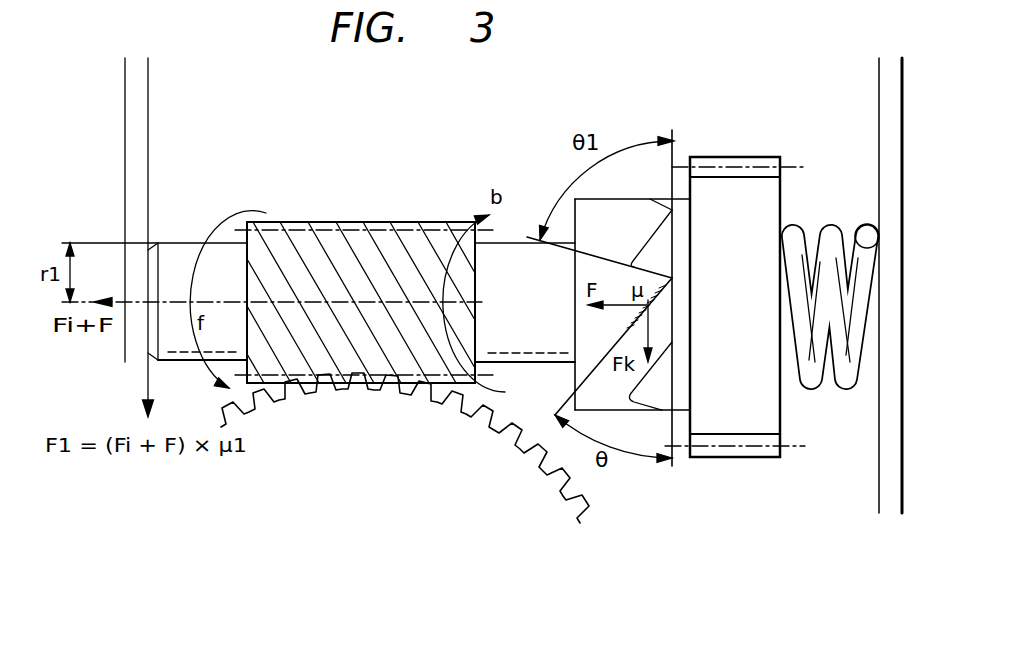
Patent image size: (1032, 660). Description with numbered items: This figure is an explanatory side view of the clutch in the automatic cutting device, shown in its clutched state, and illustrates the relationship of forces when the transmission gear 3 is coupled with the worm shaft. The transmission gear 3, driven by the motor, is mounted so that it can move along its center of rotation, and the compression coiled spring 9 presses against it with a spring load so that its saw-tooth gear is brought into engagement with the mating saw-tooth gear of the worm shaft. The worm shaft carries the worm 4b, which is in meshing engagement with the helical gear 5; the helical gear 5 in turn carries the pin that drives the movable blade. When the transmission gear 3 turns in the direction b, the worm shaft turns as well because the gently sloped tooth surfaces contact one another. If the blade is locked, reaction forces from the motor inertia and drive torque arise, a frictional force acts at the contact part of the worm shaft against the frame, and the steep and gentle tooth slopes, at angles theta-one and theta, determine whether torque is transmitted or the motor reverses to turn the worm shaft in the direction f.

The transmission gear 3 is at (745, 157).
The worm 4b is at (433, 223).
The helical gear 5 is at (413, 432).
The compression coiled spring 9 is at (863, 287).